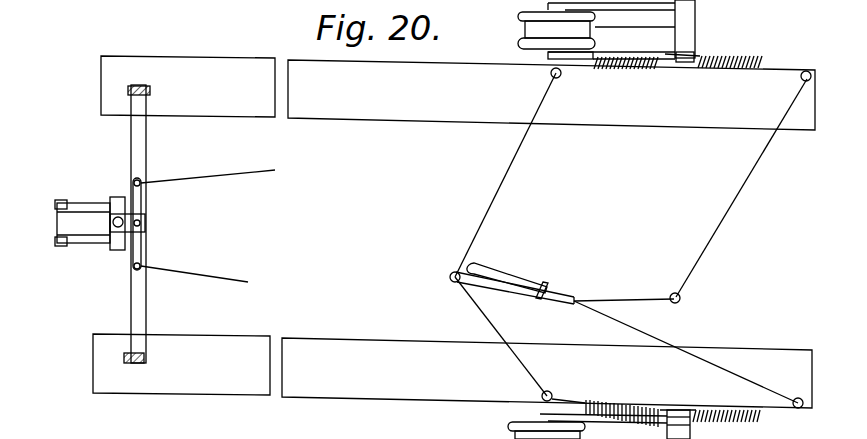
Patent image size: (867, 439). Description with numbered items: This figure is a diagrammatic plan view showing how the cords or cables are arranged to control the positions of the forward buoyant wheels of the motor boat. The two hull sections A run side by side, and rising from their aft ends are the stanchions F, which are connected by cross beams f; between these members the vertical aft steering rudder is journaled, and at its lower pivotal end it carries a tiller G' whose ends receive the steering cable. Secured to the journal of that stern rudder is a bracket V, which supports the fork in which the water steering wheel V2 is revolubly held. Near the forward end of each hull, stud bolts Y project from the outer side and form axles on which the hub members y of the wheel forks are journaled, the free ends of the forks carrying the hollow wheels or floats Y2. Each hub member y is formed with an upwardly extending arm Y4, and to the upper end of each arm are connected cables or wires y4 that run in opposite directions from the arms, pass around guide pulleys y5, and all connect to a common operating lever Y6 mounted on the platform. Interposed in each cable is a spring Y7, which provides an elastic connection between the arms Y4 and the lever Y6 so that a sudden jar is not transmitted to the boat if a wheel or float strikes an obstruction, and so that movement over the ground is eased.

The hull sections A is at (548, 234).
The stanchions F is at (150, 90).
The cross beams f is at (146, 147).
The tiller G' is at (160, 224).
The bracket V is at (120, 226).
The water steering wheel V2 is at (73, 210).
The stud bolts Y is at (637, 29).
The hub members y is at (675, 30).
The hollow wheels or floats Y2 is at (520, 30).
The upwardly extending arms Y4 is at (688, 66).
The operating lever Y6 is at (525, 291).
The spring Y7 is at (632, 68).
The cables or wires y4 is at (520, 146).
The guide pulleys y5 is at (797, 398).